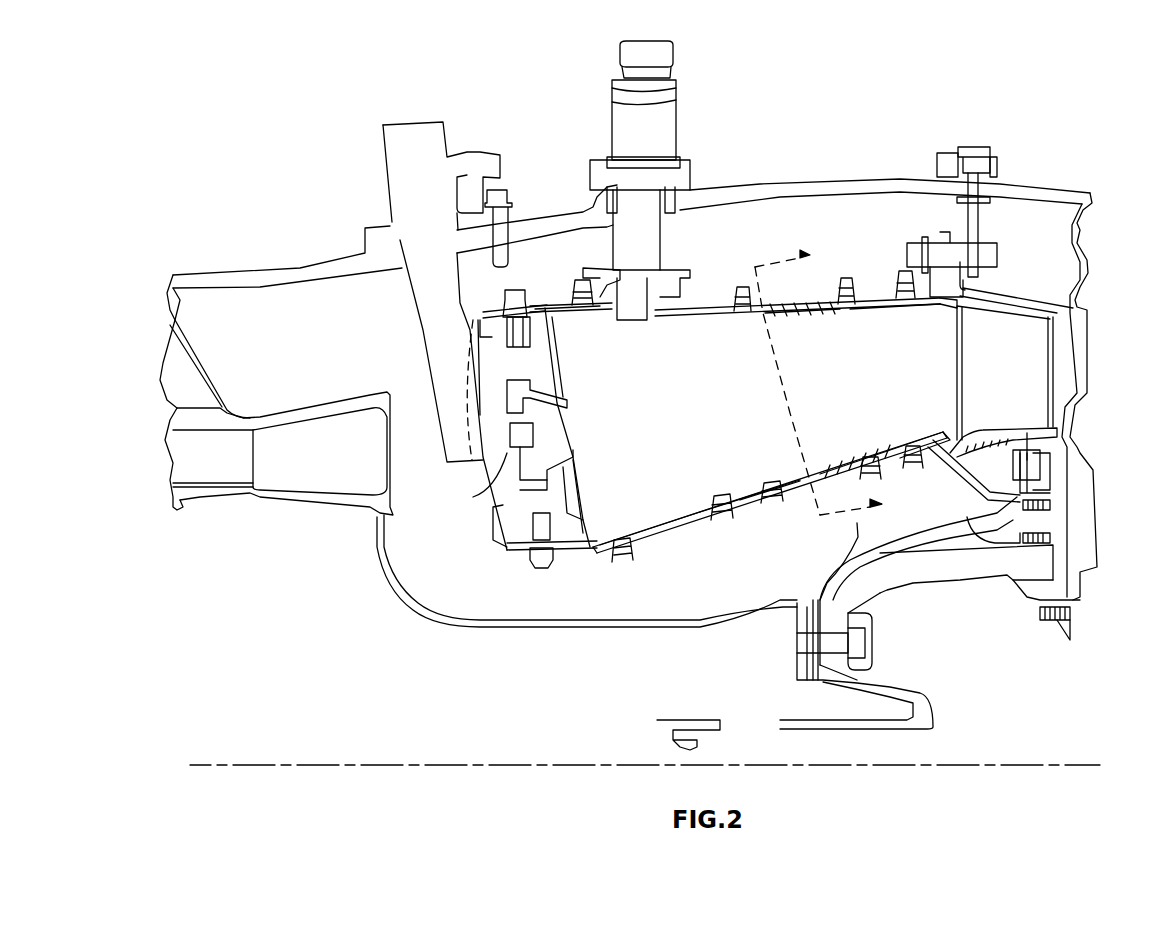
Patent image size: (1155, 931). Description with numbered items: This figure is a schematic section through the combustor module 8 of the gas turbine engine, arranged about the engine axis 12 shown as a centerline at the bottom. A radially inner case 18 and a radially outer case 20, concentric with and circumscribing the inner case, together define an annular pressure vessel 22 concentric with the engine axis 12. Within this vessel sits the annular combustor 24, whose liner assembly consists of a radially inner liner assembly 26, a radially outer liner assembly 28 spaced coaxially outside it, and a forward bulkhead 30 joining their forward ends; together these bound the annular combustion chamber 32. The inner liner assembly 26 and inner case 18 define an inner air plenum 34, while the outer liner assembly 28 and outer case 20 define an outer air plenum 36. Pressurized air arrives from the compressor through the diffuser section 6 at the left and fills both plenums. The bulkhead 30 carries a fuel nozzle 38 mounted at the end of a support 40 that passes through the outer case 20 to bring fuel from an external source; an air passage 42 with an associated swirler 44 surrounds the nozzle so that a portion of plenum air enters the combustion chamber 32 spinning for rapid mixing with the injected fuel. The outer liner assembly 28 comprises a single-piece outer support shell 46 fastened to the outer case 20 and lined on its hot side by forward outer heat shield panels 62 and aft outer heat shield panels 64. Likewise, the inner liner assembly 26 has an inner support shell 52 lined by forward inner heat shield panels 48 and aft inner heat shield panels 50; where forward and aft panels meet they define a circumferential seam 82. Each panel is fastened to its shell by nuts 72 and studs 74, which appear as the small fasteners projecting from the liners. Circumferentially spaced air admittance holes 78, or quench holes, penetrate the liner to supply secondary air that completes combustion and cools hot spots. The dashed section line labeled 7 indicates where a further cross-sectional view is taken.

The diffuser section 6 is at (328, 466).
The section line 7- 7 is at (827, 382).
The combustor module 8 is at (893, 60).
The engine axis 12 is at (1025, 765).
The radially inner case 18 is at (420, 613).
The radially outer case 20 is at (850, 183).
The annular pressure vessel 22 is at (460, 570).
The annular combustor 24 is at (643, 540).
The radially inner liner assembly 26 is at (670, 517).
The radially outer liner assembly 28 is at (830, 300).
The bulkhead 30 is at (547, 347).
The annular combustion chamber 32 is at (706, 434).
The inner air plenum 34 is at (793, 576).
The outer air plenum 36 is at (892, 238).
The fuel nozzle 38 is at (473, 497).
The support 40 is at (430, 302).
The air passage 42 is at (576, 449).
The swirler 44 is at (570, 400).
The outer support shell 46 is at (700, 300).
The forward inner heat shield panels 48 is at (703, 533).
The aft inner heat shield panels 50 is at (885, 430).
The inner support shell 52 is at (760, 487).
The forward outer heat shield panels 62 is at (676, 318).
The aft outer heat shield panels 64 is at (880, 310).
The nuts 72 is at (880, 465).
The studs 74 is at (880, 485).
The air admittance holes 78 is at (795, 312).
The circumferential seam 82 is at (745, 480).